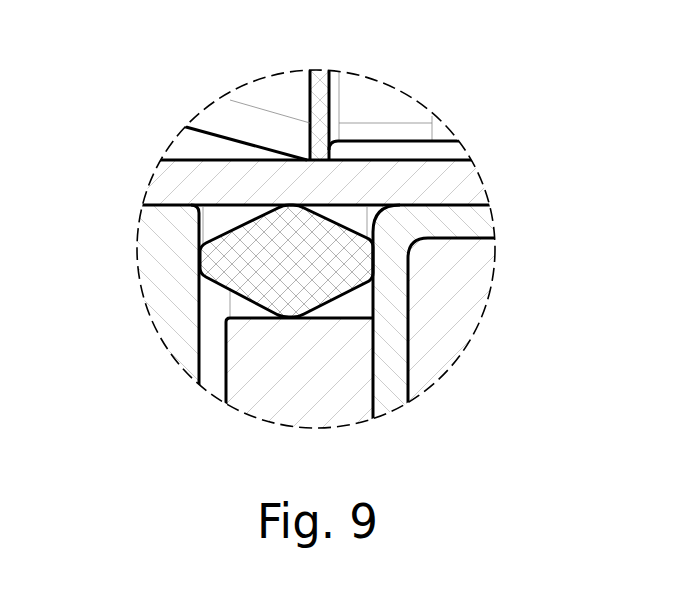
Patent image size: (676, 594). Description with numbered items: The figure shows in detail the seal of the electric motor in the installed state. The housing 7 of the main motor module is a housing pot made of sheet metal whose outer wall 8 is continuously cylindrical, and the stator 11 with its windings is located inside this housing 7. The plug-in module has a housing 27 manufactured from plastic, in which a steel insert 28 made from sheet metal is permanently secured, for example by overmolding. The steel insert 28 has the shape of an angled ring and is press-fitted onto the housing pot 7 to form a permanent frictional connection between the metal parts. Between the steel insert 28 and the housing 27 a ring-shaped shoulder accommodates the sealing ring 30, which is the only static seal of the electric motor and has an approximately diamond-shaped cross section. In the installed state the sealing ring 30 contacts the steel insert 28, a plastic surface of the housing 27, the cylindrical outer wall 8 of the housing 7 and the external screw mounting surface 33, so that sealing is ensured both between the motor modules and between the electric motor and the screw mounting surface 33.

The housing 7 is at (445, 160).
The outer wall 8 is at (228, 205).
The stator 11 is at (220, 115).
The housing 27 is at (258, 402).
The steel insert 28 is at (410, 362).
The sealing ring 30 is at (199, 282).
The screw mounting surface 33 is at (200, 352).